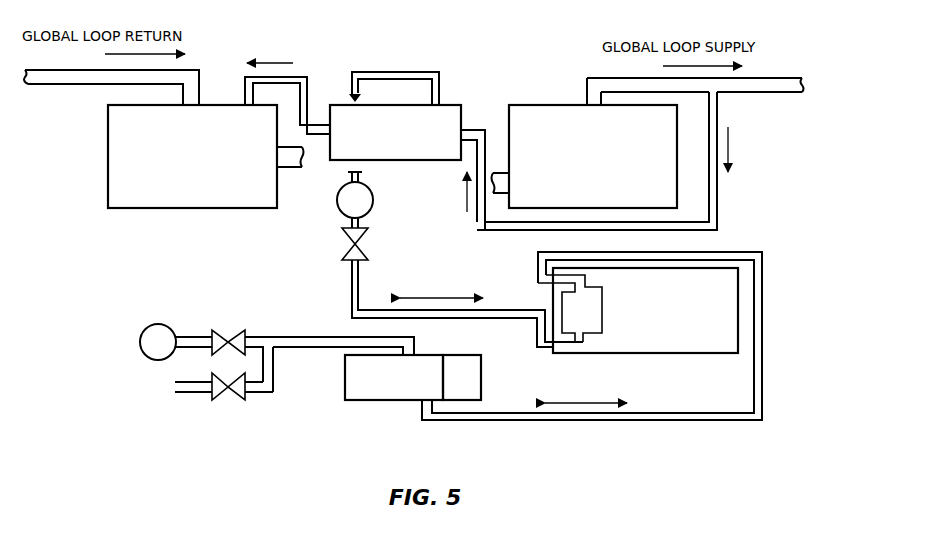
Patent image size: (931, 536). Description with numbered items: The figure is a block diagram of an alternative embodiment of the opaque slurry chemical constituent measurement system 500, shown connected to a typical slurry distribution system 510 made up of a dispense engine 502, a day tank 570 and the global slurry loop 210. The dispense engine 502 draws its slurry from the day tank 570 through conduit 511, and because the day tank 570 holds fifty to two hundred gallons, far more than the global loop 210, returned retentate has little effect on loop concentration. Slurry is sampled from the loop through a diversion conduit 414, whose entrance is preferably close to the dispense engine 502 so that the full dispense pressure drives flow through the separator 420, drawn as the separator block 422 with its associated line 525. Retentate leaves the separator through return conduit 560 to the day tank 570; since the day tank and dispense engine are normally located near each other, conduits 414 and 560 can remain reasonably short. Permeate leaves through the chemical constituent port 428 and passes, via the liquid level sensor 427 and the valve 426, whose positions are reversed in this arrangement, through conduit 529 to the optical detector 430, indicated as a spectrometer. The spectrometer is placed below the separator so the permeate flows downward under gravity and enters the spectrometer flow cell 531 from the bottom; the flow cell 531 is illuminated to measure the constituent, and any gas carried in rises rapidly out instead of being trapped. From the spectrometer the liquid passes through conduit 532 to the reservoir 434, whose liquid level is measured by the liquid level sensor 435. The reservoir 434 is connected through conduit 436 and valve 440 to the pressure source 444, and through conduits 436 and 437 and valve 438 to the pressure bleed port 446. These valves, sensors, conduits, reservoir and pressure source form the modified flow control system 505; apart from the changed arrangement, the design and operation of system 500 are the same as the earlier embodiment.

The global slurry loop 210 is at (46, 85).
The return conduit 560 is at (303, 77).
The separator line 525 is at (403, 72).
The chemical constituent port 428 is at (435, 110).
The dispense engine 502 is at (550, 105).
The conduit 511 is at (283, 168).
The day tank 570 is at (108, 190).
The separator 422 is at (392, 160).
The separator 420 is at (430, 178).
The diversion conduit 414 is at (718, 213).
The slurry distribution system 510 is at (778, 173).
The liquid level sensor 427 is at (347, 214).
The valve 426 is at (347, 254).
The pressure source 444 is at (163, 324).
The valve 440 is at (236, 327).
The chemical constituent conduit 436 is at (287, 337).
The pipe to spectrometer 529 is at (462, 320).
The spectrometer flow cell 531 is at (602, 302).
The optical detector 430 is at (657, 353).
The return pipe 532 is at (762, 355).
The flow control system 505 is at (88, 362).
The system 500 is at (87, 440).
The pressure bleed port 446 is at (190, 395).
The valve 438 is at (240, 398).
The chemical constituent conduit 437 is at (273, 378).
The reservoir 434 is at (375, 400).
The liquid level sensor 435 is at (481, 363).